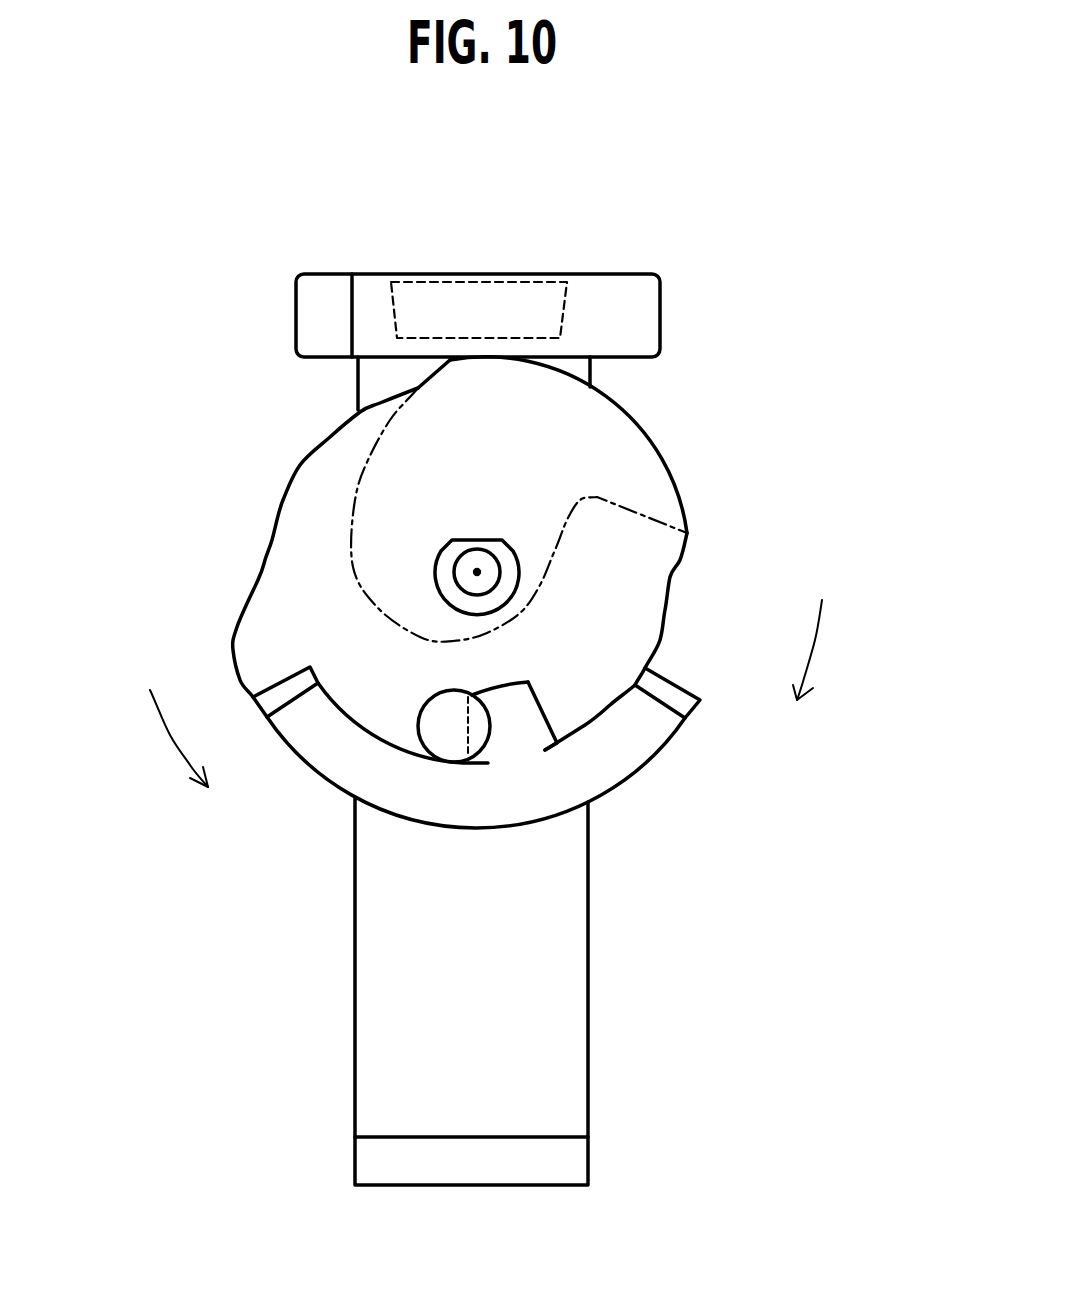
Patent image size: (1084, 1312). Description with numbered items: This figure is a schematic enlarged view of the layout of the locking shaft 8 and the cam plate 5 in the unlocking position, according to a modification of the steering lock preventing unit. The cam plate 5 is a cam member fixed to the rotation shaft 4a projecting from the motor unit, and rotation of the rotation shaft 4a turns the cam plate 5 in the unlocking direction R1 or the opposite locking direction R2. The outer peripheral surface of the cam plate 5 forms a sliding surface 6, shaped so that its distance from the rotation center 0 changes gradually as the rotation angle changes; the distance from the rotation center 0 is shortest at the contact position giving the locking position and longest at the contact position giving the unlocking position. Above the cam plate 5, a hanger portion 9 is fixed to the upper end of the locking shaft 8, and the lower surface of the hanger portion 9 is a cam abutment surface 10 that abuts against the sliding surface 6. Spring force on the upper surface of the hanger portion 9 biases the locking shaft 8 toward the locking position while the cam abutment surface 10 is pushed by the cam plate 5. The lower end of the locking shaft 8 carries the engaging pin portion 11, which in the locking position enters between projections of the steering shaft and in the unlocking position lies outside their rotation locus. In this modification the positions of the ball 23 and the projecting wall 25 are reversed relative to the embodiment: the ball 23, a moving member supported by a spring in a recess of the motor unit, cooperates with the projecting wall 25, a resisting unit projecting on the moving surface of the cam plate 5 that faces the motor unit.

The hanger portion 9 is at (642, 318).
The cam abutment surface 10 is at (620, 375).
The cam plate 5 is at (684, 487).
The sliding surface 6 is at (365, 463).
The rotation shaft 4a is at (462, 578).
The rotation center 0 is at (477, 572).
The ball 23 is at (447, 733).
The projecting wall 25 is at (545, 717).
The locking shaft 8 is at (570, 973).
The engaging pin portion 11 is at (570, 1162).
The unlocking direction R1 is at (173, 740).
The locking direction R2 is at (817, 652).